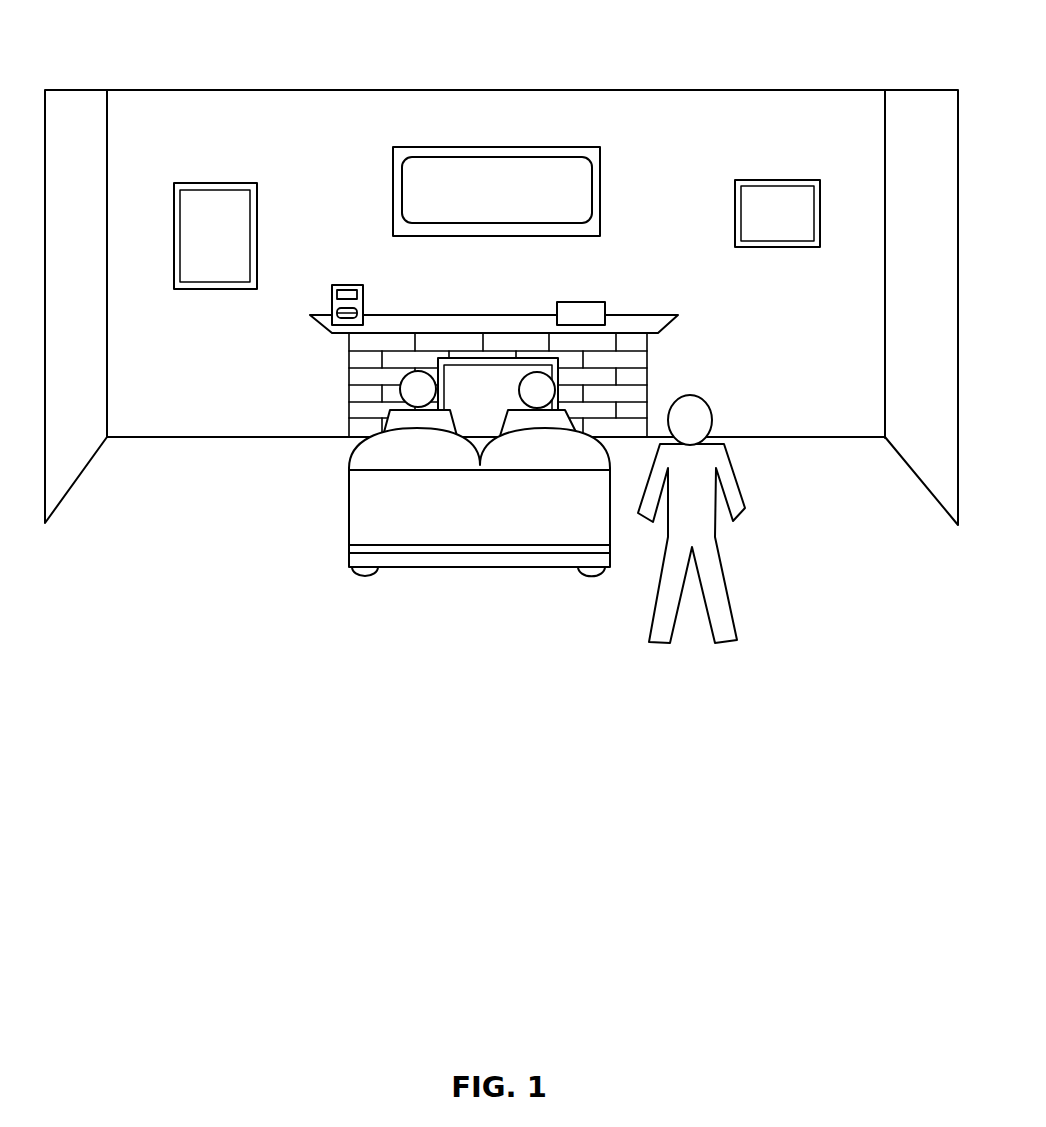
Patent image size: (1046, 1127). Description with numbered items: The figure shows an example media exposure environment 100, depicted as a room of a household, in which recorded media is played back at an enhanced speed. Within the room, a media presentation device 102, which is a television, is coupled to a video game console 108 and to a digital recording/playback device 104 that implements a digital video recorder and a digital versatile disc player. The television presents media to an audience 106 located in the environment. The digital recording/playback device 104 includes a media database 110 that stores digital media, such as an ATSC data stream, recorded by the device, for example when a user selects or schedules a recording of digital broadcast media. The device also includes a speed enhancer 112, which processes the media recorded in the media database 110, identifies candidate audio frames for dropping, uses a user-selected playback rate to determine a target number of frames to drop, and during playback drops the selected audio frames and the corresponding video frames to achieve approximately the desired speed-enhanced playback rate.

The media exposure environment 100 is at (136, 75).
The media presentation device 102 is at (496, 191).
The digital recording/playback device 104 is at (348, 285).
The audience 106 is at (814, 540).
The video game console 108 is at (600, 302).
The media database 110 is at (332, 305).
The speed enhancer 112 is at (363, 290).